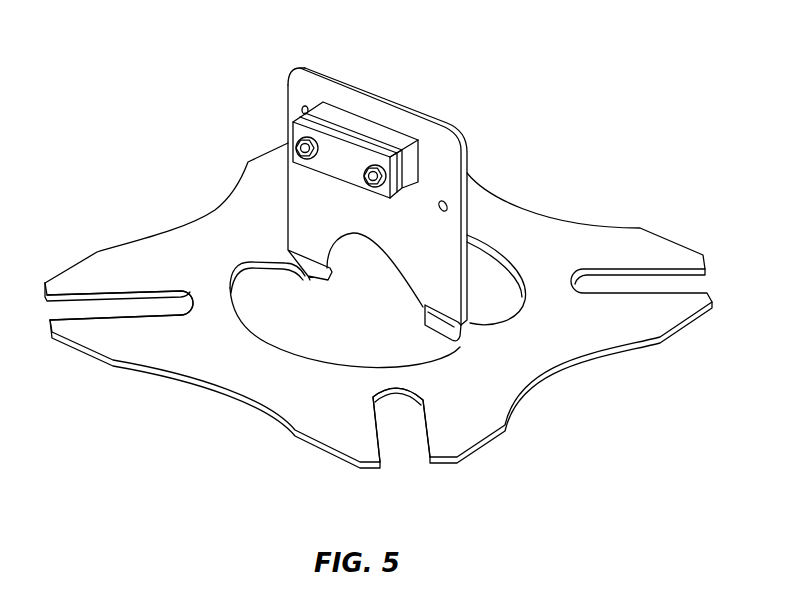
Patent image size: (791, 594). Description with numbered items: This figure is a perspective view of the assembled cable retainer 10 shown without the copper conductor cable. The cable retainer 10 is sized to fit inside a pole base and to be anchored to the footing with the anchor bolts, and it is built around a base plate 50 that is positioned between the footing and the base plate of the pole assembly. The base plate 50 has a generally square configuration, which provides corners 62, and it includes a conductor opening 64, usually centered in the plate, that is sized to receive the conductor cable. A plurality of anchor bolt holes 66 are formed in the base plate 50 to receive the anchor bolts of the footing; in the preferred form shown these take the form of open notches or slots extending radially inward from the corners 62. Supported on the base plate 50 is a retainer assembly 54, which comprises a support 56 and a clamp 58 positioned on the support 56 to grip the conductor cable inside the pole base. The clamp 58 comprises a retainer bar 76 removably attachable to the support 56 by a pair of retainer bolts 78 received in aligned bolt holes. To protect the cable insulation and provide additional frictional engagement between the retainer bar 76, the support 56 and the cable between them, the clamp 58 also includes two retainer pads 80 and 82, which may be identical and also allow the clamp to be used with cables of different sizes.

The cable retainer 10 is at (583, 158).
The base plate 50 is at (650, 242).
The retainer assembly 54 is at (447, 181).
The support 56 is at (293, 213).
The clamp 58 is at (320, 119).
The corners 62 is at (80, 337).
The conductor opening 64 is at (314, 324).
The anchor bolt holes 66 is at (418, 460).
The retainer bar 76 is at (327, 164).
The retainer bolts 78 is at (366, 160).
The retainer pad 80 is at (391, 152).
The retainer pad 82 is at (402, 140).